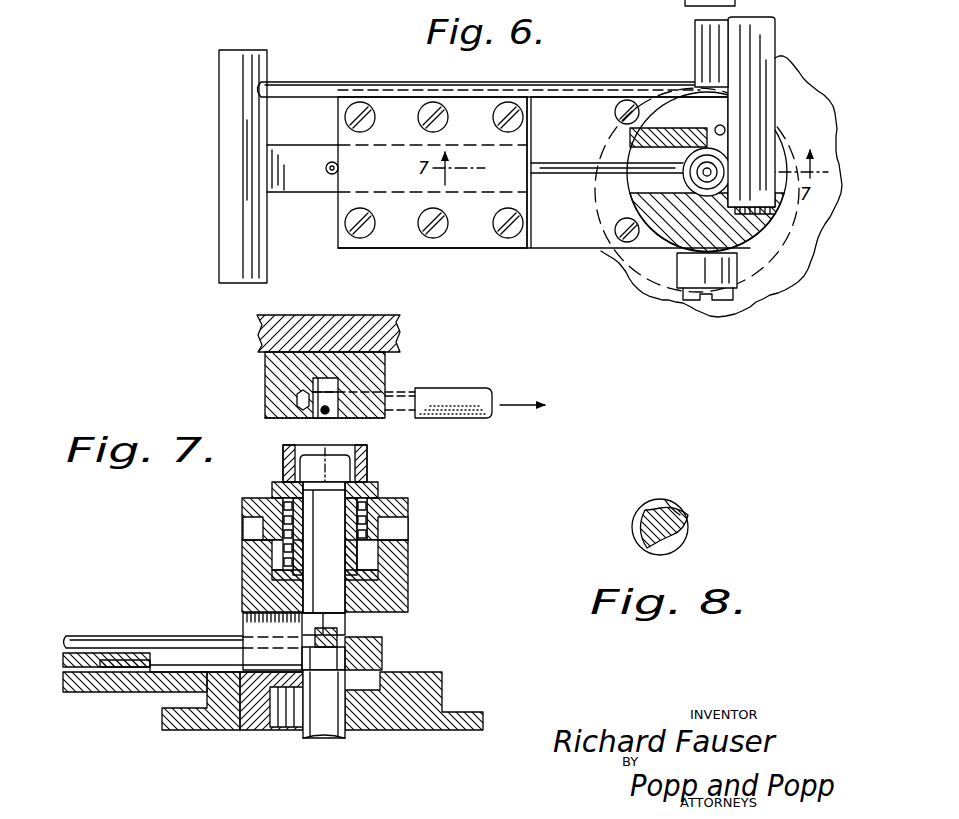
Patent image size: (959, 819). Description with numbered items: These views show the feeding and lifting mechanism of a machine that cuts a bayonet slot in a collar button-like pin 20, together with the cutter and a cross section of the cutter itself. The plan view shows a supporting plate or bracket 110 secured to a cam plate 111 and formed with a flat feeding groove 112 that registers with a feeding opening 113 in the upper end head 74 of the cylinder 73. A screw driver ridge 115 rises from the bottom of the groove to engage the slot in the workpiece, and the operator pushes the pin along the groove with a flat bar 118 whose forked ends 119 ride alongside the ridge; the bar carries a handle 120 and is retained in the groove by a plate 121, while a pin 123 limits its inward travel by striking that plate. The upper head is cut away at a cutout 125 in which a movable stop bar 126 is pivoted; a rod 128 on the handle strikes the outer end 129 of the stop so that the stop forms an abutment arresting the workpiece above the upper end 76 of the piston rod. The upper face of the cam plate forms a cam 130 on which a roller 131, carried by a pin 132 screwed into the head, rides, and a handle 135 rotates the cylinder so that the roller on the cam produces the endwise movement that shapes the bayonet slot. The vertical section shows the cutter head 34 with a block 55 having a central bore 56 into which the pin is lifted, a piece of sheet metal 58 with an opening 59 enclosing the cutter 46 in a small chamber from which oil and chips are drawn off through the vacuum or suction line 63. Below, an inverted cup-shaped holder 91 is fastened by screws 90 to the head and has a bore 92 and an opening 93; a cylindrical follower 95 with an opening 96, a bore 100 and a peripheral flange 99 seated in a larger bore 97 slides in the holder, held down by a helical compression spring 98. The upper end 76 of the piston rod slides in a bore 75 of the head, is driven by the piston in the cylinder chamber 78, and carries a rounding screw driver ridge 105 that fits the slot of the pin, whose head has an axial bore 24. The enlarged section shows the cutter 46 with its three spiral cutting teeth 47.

In FIG. 6, the handle 120 is at (217, 168).
In FIG. 6, the rod 128 is at (350, 83).
In FIG. 7, the rod 128 is at (81, 635).
In FIG. 6, the plate 121 is at (472, 249).
In FIG. 7, the plate 121 is at (97, 653).
In FIG. 6, the flat bar 118 is at (310, 167).
In FIG. 6, the pin 123 is at (330, 162).
In FIG. 6, the supporting plate or bracket 110 is at (567, 250).
In FIG. 7, the supporting plate or bracket 110 is at (110, 692).
In FIG. 6, the feeding groove 112 is at (555, 200).
In FIG. 6, the screw driver ridge 115 is at (552, 160).
In FIG. 7, the screw driver ridge 115 is at (165, 664).
In FIG. 6, the feeding opening 113 is at (658, 150).
In FIG. 7, the feeding opening 113 is at (243, 630).
In FIG. 6, the forked ends 119 is at (583, 180).
In FIG. 7, the forked ends 119 is at (122, 658).
In FIG. 6, the upper end head 74 is at (748, 300).
In FIG. 7, the upper end head 74 is at (256, 730).
In FIG. 6, the outer end 129 is at (777, 24).
In FIG. 6, the roller 131 is at (699, 75).
In FIG. 6, the pin 132 is at (717, 300).
In FIG. 6, the handle 135 is at (697, 50).
In FIG. 6, the cam 130 is at (690, 4).
In FIG. 7, the cam 130 is at (416, 690).
In FIG. 6, the stop bar 126 is at (772, 93).
In FIG. 7, the stop bar 126 is at (400, 674).
In FIG. 6, the cutout 125 is at (778, 150).
In FIG. 7, the cutout 125 is at (382, 656).
In FIG. 6, the cam plate 111 is at (650, 270).
In FIG. 7, the cam plate 111 is at (196, 730).
In FIG. 7, the head 34 is at (395, 325).
In FIG. 7, the block 55 is at (390, 362).
In FIG. 7, the central bore 56 is at (315, 385).
In FIG. 7, the cutter 46 is at (298, 398).
In FIG. 8, the cutter 46 is at (640, 530).
In FIG. 7, the piece of sheet metal 58 is at (272, 420).
In FIG. 7, the opening 59 is at (320, 418).
In FIG. 7, the vacuum or suction line 63 is at (472, 388).
In FIG. 7, the opening 93 is at (340, 447).
In FIG. 7, the bore 92 is at (362, 476).
In FIG. 7, the opening 96 is at (300, 479).
In FIG. 7, the inverted cup-shaped holder 91 is at (378, 490).
In FIG. 7, the screws 90 is at (410, 526).
In FIG. 7, the cylindrical follower 95 is at (290, 560).
In FIG. 7, the helical compression spring 98 is at (283, 526).
In FIG. 7, the larger bore 97 is at (380, 562).
In FIG. 7, the peripheral flange 99 is at (346, 580).
In FIG. 7, the bore 100 is at (348, 604).
In FIG. 7, the bore 75 is at (400, 610).
In FIG. 7, the axial bore 24 is at (332, 625).
In FIG. 7, the pin 20 is at (356, 655).
In FIG. 7, the rounding screw driver ridge 105 is at (312, 690).
In FIG. 7, the upper end of piston rod 76 is at (326, 740).
In FIG. 7, the cylinder 73 is at (390, 733).
In FIG. 7, the cylinder chamber 78 is at (380, 733).
In FIG. 8, the spiral cutting teeth 47 is at (685, 520).